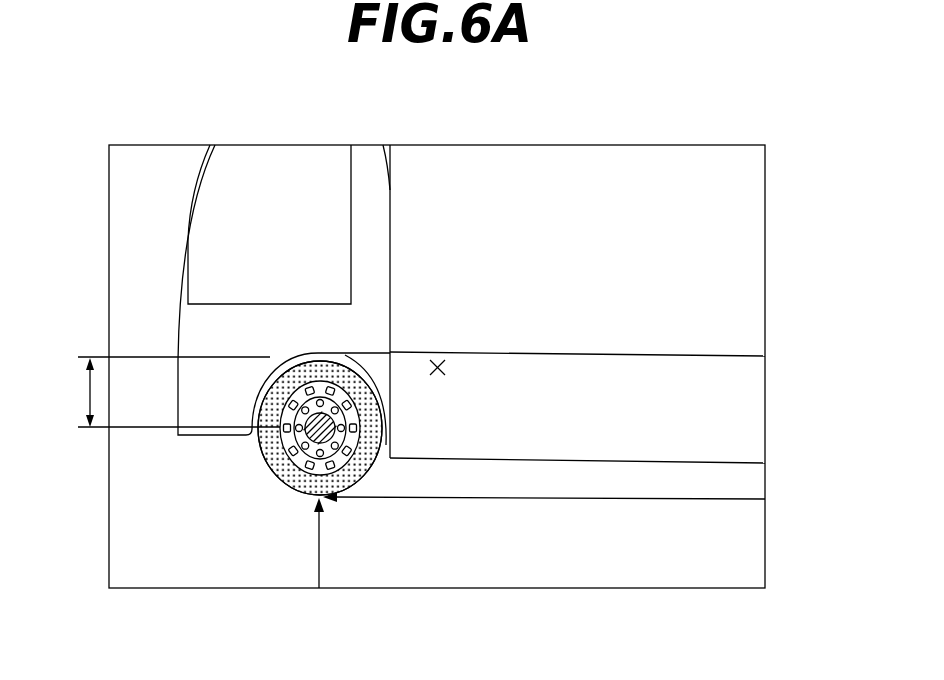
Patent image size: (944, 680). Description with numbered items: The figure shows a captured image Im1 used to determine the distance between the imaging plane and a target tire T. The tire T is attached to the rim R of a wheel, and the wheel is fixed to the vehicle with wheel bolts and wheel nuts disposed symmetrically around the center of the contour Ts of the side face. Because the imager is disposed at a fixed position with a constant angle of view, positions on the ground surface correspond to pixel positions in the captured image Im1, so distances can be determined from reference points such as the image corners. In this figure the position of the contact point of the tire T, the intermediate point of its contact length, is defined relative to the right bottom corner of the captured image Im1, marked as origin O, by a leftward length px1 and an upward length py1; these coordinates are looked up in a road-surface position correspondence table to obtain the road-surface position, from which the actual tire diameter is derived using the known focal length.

The captured image Im1 is at (635, 145).
The tire T is at (307, 370).
The contour of the side face Ts is at (367, 378).
The rim R is at (285, 397).
The origin of image coordinates O is at (450, 369).
The leftward length px1 is at (544, 514).
The upward length py1 is at (338, 543).